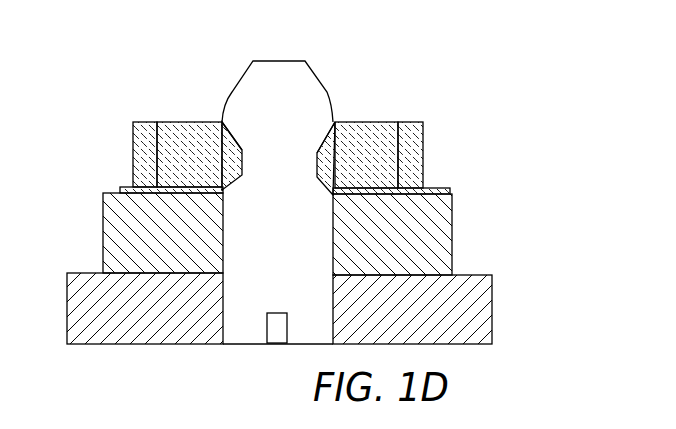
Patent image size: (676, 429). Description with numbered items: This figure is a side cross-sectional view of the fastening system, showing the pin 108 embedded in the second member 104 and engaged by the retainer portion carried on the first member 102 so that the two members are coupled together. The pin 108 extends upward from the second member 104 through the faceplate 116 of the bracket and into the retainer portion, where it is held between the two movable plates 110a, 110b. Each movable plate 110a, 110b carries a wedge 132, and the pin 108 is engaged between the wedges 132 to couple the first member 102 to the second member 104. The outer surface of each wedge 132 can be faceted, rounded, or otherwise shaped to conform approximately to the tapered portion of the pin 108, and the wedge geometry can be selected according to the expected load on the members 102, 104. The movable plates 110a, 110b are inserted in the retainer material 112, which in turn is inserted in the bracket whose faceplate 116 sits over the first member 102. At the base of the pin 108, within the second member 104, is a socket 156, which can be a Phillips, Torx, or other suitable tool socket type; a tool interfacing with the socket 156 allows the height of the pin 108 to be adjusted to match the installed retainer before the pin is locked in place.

The first member 102 is at (411, 243).
The second member 104 is at (431, 324).
The pin 108 is at (253, 61).
The movable plate 110a is at (183, 118).
The movable plate 110b is at (370, 118).
The retainer material 112 is at (150, 117).
The faceplate 116 is at (118, 188).
The wedge 132 is at (223, 118).
The socket 156 is at (272, 345).